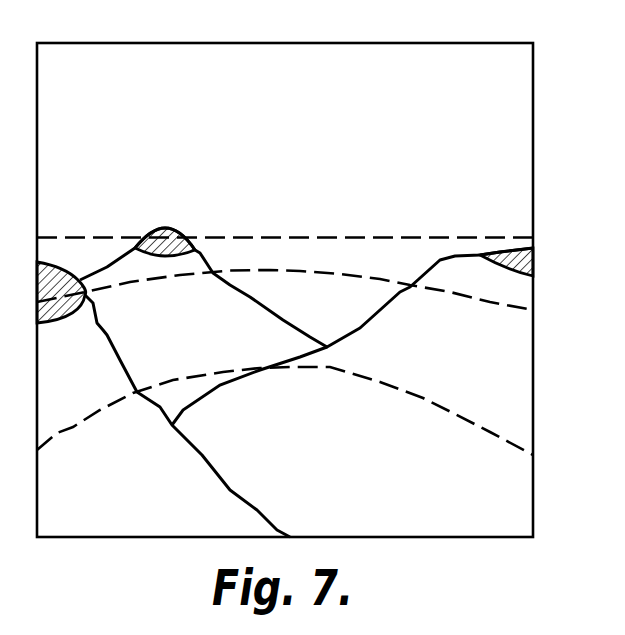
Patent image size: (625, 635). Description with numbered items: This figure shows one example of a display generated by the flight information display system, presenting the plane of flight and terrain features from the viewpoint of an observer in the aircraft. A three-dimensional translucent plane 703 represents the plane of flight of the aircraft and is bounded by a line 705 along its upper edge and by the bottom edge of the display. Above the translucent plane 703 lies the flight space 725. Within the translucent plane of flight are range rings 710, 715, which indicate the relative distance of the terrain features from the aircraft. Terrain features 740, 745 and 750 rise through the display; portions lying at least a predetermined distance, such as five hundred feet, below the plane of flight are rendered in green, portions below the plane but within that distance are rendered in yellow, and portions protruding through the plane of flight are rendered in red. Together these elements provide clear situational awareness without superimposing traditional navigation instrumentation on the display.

The three-dimensional translucent plane 703 is at (253, 412).
The line 705 is at (342, 237).
The range ring 710 is at (423, 399).
The range ring 715 is at (488, 304).
The flight space 725 is at (167, 127).
The terrain feature 740 is at (60, 263).
The terrain feature 745 is at (178, 231).
The terrain feature 750 is at (498, 253).